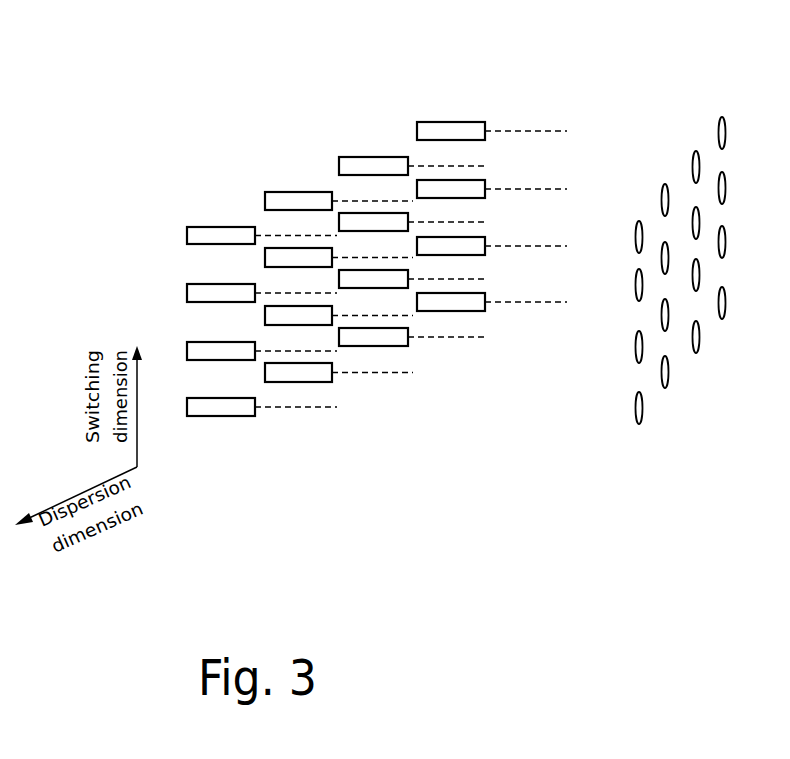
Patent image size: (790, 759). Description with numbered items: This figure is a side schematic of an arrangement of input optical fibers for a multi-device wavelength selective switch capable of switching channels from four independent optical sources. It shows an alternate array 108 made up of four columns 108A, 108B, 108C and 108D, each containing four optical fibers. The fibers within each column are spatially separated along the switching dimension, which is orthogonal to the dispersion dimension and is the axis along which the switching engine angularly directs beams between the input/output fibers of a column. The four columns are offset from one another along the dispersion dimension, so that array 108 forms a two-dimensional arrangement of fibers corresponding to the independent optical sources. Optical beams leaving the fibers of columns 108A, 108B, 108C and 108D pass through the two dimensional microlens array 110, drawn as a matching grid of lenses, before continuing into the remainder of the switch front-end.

The array 108 is at (230, 72).
The first column of optical fibers 108A is at (203, 227).
The second column of optical fibers 108B is at (297, 192).
The third column of optical fibers 108C is at (375, 157).
The fourth column of optical fibers 108D is at (450, 122).
The microlens array 110 is at (681, 148).